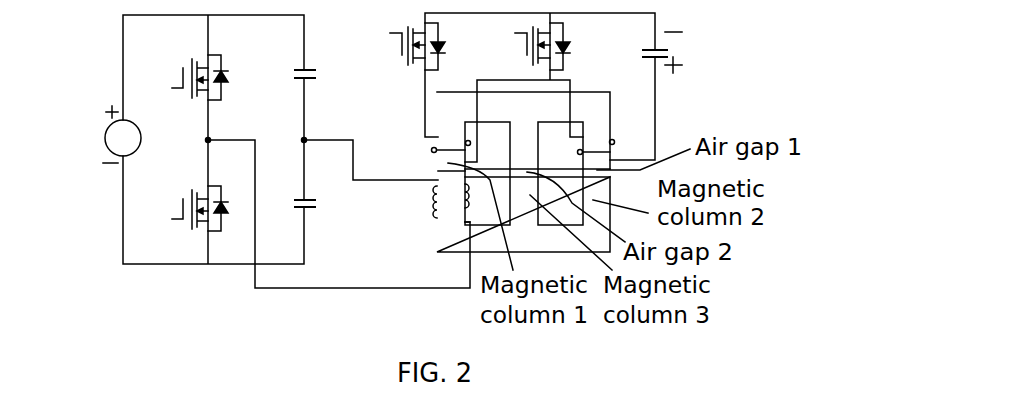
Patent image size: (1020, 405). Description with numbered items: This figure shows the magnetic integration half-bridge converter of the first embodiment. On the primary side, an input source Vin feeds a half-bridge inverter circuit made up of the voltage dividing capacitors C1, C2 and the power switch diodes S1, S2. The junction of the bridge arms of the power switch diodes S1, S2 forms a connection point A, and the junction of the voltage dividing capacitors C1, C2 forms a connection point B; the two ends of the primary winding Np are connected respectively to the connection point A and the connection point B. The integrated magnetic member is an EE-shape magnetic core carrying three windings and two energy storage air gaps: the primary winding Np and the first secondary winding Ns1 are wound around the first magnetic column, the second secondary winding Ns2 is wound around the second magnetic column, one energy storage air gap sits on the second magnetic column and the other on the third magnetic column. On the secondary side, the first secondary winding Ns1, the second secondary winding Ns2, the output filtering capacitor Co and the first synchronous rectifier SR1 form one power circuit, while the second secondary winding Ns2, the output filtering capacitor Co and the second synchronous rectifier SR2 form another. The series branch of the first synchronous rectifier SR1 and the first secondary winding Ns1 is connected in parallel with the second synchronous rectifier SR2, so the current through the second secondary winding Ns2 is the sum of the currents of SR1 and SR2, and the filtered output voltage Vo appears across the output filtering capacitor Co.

The input voltage source Vin is at (101, 134).
The power switch diode S1 is at (190, 77).
The power switch diode S2 is at (190, 208).
The voltage dividing capacitor C1 is at (287, 69).
The voltage dividing capacitor C2 is at (287, 202).
The connection point of bridge arms A is at (224, 130).
The connection point of voltage dividing capacitors B is at (320, 129).
The first synchronous rectifier SR1 is at (403, 50).
The second synchronous rectifier SR2 is at (525, 50).
The output filtering capacitor Co is at (638, 56).
The output voltage Vo is at (689, 52).
The primary winding Np is at (432, 196).
The first secondary winding Ns1 is at (427, 144).
The second secondary winding Ns2 is at (614, 146).